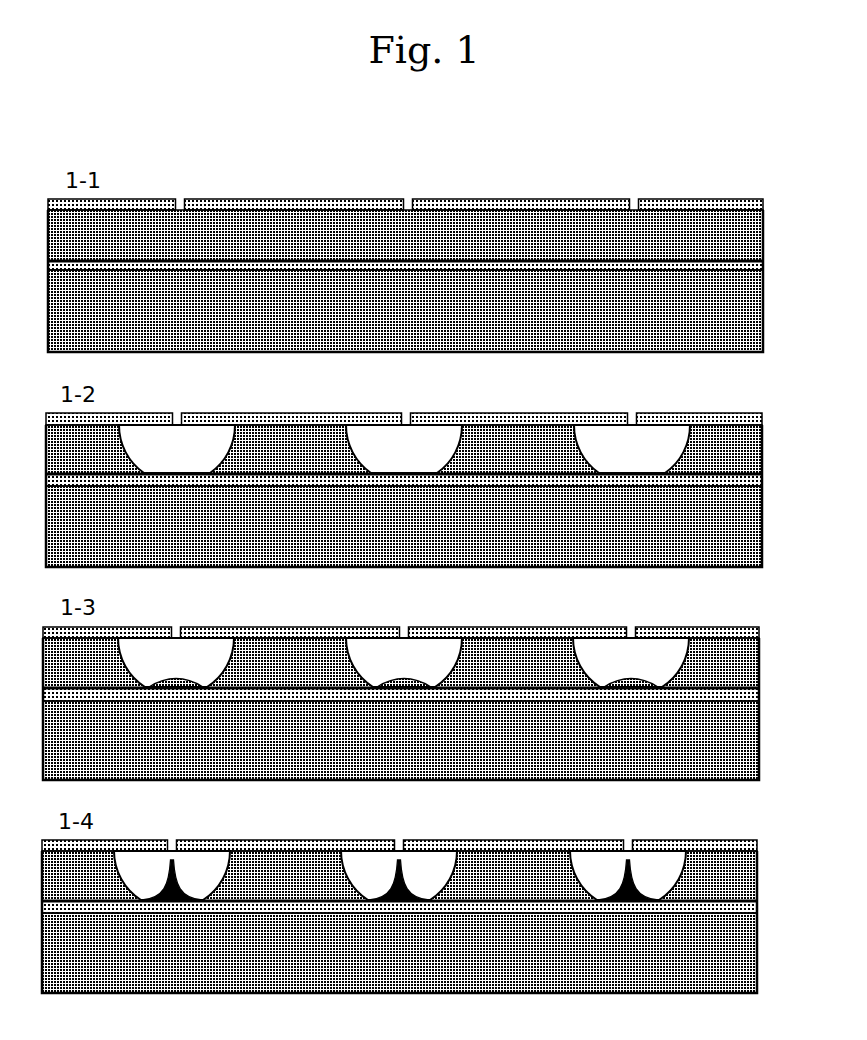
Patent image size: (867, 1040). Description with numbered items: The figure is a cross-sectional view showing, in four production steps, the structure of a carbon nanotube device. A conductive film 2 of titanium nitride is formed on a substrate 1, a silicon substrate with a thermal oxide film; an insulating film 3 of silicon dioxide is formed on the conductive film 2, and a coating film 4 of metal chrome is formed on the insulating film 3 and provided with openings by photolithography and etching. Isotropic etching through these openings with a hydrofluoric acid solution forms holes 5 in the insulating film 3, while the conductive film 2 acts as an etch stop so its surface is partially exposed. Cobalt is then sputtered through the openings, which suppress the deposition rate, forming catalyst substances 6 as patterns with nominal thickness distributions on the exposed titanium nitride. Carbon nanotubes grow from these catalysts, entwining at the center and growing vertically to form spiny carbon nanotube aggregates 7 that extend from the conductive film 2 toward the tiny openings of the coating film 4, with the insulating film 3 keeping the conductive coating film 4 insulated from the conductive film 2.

The substrate 1 is at (422, 631).
The conductive film 2 is at (422, 586).
The insulating film 3 is at (422, 555).
The coating film 4 is at (422, 525).
The holes 5 is at (402, 662).
The catalyst substances 6 is at (403, 668).
The spiny carbon nanotube aggregates 7 is at (400, 855).